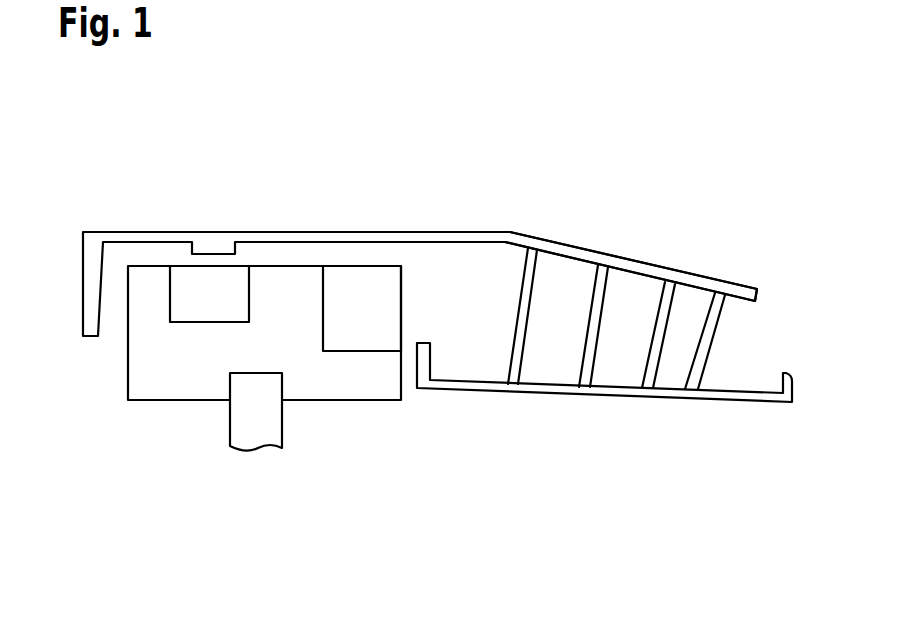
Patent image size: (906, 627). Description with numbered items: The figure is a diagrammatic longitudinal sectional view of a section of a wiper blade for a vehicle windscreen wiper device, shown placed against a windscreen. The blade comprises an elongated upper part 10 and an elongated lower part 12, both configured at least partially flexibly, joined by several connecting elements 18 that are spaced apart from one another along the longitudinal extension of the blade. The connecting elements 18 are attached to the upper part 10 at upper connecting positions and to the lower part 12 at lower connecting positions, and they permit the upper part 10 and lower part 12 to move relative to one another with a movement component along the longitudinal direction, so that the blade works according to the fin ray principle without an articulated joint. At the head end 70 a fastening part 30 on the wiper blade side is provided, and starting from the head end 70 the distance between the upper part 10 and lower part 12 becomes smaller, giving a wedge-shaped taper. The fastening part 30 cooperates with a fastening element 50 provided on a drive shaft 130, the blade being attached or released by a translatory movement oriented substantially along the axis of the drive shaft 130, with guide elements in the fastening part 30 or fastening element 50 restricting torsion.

The head end 70 is at (90, 190).
The fastening part 30 is at (147, 238).
The upper part 10 is at (584, 255).
The connecting elements 18 is at (662, 300).
The lower part 12 is at (662, 396).
The fastening element 50 is at (187, 383).
The drive shaft 130 is at (273, 422).